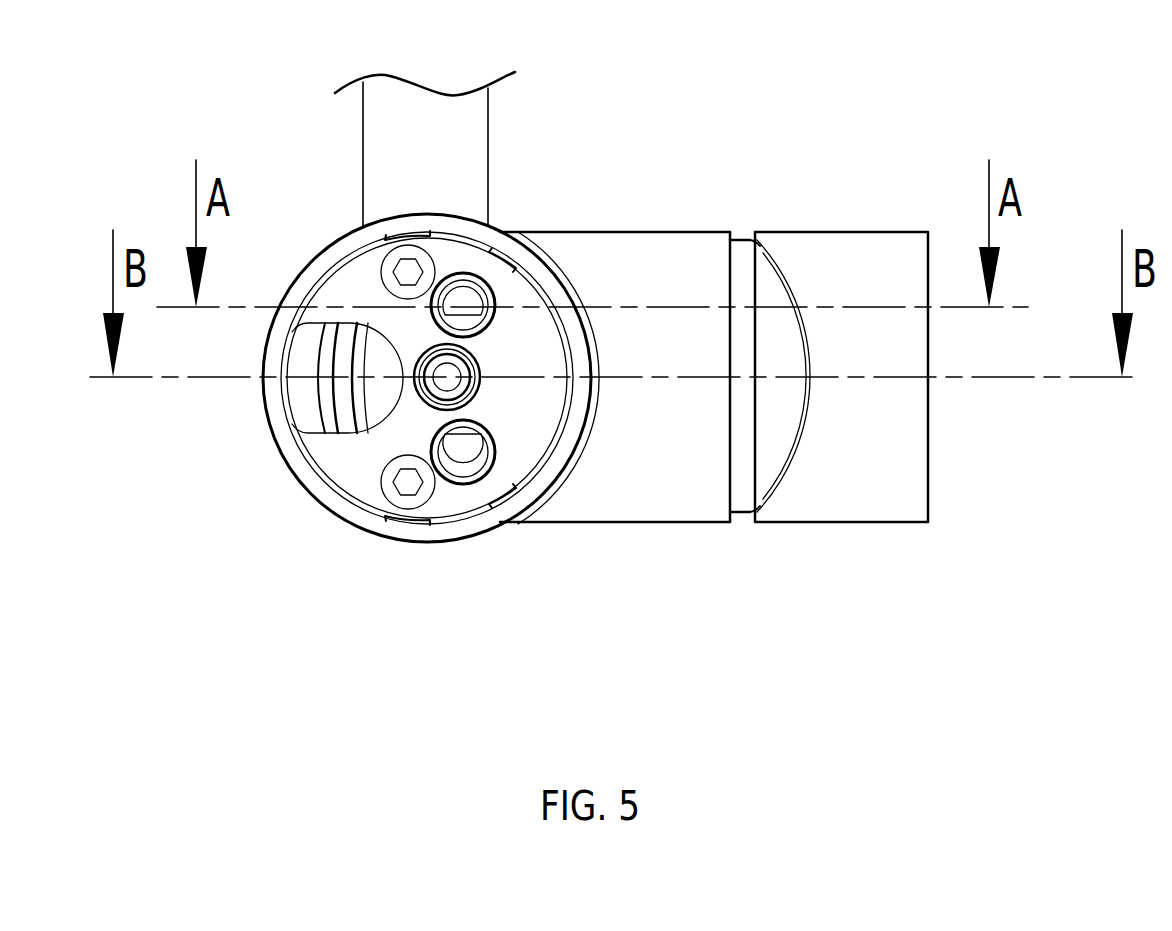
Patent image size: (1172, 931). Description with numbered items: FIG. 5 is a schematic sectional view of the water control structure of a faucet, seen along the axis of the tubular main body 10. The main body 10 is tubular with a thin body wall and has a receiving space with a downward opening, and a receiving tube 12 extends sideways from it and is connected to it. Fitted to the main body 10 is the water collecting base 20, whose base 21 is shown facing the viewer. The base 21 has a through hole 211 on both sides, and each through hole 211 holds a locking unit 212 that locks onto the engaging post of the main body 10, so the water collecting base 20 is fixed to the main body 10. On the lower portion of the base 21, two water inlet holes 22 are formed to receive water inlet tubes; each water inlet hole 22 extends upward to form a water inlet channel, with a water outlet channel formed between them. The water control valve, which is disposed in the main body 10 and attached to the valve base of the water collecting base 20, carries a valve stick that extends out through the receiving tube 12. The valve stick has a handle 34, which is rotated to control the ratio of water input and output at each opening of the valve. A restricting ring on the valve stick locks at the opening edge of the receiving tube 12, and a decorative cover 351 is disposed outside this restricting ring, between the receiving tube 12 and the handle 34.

The main body 10 is at (425, 542).
The receiving tube 12 is at (613, 500).
The water collecting base 20 is at (362, 478).
The base 21 is at (369, 272).
The through hole 211 is at (408, 272).
The locking unit 212 is at (408, 483).
The water inlet hole 22 is at (462, 300).
The handle 34 is at (884, 465).
The decorative cover 351 is at (748, 277).